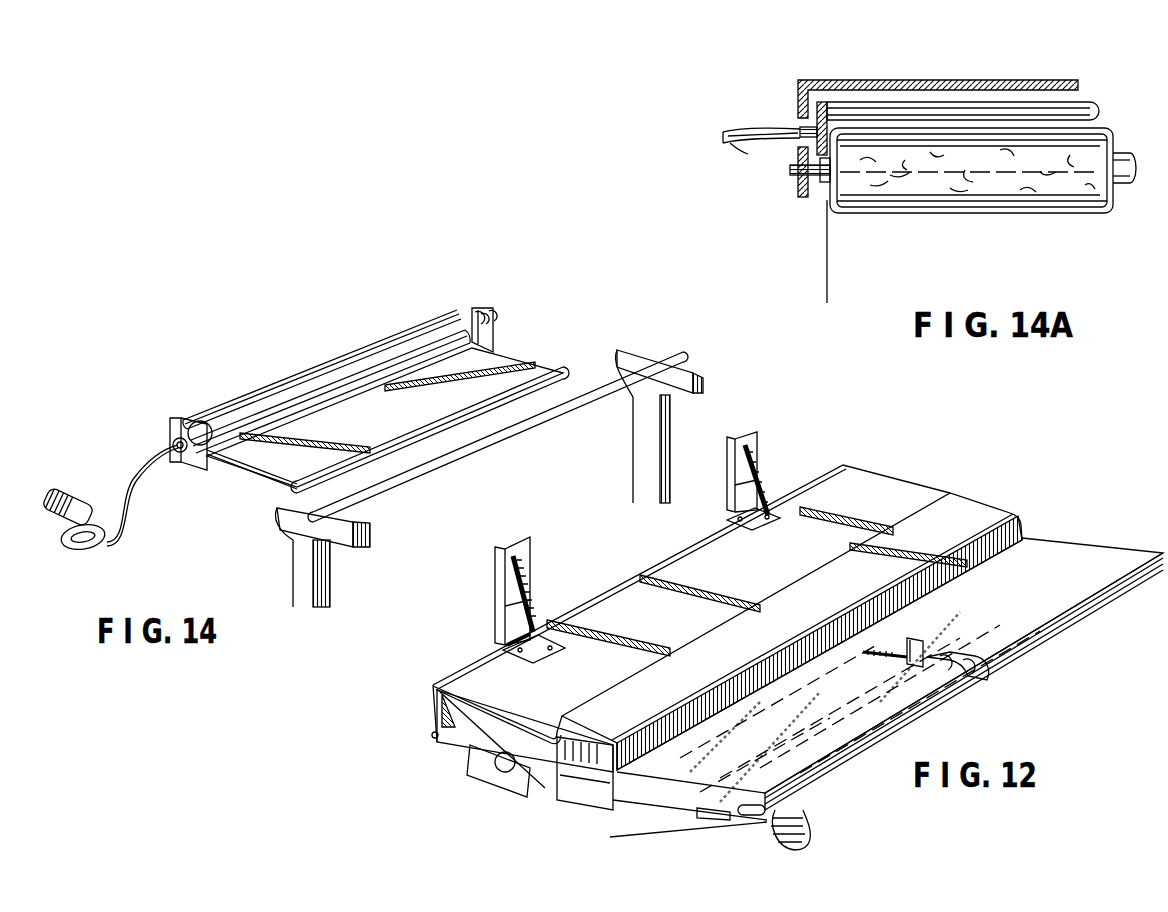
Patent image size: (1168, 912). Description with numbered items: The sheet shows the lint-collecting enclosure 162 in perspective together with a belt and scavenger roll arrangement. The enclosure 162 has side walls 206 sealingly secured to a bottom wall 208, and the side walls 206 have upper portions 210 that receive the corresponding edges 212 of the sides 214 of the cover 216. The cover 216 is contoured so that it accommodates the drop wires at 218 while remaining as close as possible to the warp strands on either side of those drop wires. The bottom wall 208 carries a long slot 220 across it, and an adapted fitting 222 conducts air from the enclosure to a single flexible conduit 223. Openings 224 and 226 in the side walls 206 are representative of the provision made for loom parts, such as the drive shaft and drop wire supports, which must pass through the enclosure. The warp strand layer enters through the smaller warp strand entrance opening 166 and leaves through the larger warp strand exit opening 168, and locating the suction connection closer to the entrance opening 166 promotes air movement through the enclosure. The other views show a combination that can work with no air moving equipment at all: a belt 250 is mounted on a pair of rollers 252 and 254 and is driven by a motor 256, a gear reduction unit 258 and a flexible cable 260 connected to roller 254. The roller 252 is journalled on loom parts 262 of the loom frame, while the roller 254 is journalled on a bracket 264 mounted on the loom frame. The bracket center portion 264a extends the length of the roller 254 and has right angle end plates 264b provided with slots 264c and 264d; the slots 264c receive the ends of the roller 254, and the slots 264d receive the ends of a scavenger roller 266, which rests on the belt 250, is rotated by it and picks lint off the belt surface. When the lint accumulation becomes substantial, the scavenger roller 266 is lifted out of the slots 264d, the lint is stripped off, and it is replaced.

In FIG. 12, the enclosure 162 is at (988, 487).
In FIG. 12, the warp strand entrance opening 166 is at (1073, 607).
In FIG. 12, the warp strand exit opening 168 is at (432, 709).
In FIG. 12, the side walls 206 is at (467, 715).
In FIG. 12, the bottom wall 208 is at (857, 755).
In FIG. 12, the upper portions 210 is at (493, 715).
In FIG. 12, the edges 212 is at (457, 689).
In FIG. 12, the sides 214 is at (483, 699).
In FIG. 12, the cover 216 is at (703, 585).
In FIG. 12, the drop wire accommodation 218 is at (705, 652).
In FIG. 12, the slot 220 is at (847, 692).
In FIG. 12, the fitting 222 is at (880, 735).
In FIG. 12, the flexible conduit 223 is at (767, 822).
In FIG. 12, the opening 224 is at (500, 755).
In FIG. 12, the opening 226 is at (567, 789).
In FIG. 14A, the belt 250 is at (847, 277).
In FIG. 14, the belt 250 is at (493, 370).
In FIG. 14, the roller 252 is at (683, 353).
In FIG. 14A, the roller 254 is at (820, 120).
In FIG. 14, the motor 256 is at (73, 497).
In FIG. 14, the gear reduction unit 258 is at (70, 550).
In FIG. 14A, the flexible cable 260 is at (740, 153).
In FIG. 14, the flexible cable 260 is at (133, 480).
In FIG. 14, the loom parts 262 is at (297, 523).
In FIG. 14, the bracket 264 is at (455, 304).
In FIG. 14A, the bracket center portion 264a is at (958, 80).
In FIG. 14, the bracket center portion 264a is at (313, 367).
In FIG. 14, the right angle end plates 264b is at (193, 462).
In FIG. 14A, the slots 264c is at (797, 117).
In FIG. 14, the slots 264c is at (197, 407).
In FIG. 14, the slots 264d is at (213, 448).
In FIG. 14A, the scavenger roller 266 is at (827, 180).
In FIG. 14, the scavenger roller 266 is at (493, 330).